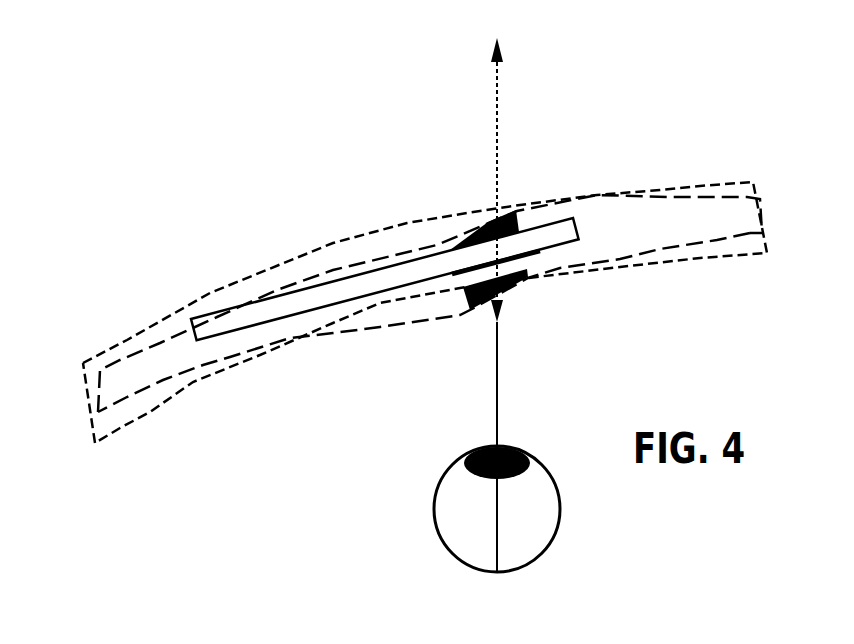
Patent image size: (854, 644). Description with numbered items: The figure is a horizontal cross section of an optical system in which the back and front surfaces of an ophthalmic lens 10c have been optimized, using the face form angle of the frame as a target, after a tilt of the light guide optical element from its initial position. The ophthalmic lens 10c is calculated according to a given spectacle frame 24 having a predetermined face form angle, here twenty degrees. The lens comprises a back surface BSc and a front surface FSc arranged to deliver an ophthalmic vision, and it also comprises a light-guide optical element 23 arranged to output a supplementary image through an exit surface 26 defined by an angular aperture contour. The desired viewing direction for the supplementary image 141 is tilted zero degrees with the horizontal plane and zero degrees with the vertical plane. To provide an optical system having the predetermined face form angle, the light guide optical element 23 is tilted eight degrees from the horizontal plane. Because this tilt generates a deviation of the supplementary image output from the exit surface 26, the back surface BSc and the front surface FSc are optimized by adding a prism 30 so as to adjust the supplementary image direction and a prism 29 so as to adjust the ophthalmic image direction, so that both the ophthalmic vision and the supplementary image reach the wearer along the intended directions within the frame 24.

The desired viewing direction for the supplementary image 141 is at (497, 167).
The ophthalmic lens 10c is at (108, 365).
The spectacle frame 24 is at (82, 438).
The front surface FSc is at (720, 176).
The back surface BSc is at (683, 263).
The light-guide optical element 23 is at (384, 316).
The prism 29 is at (467, 207).
The exit surface 26 is at (527, 257).
The prism 30 is at (477, 327).